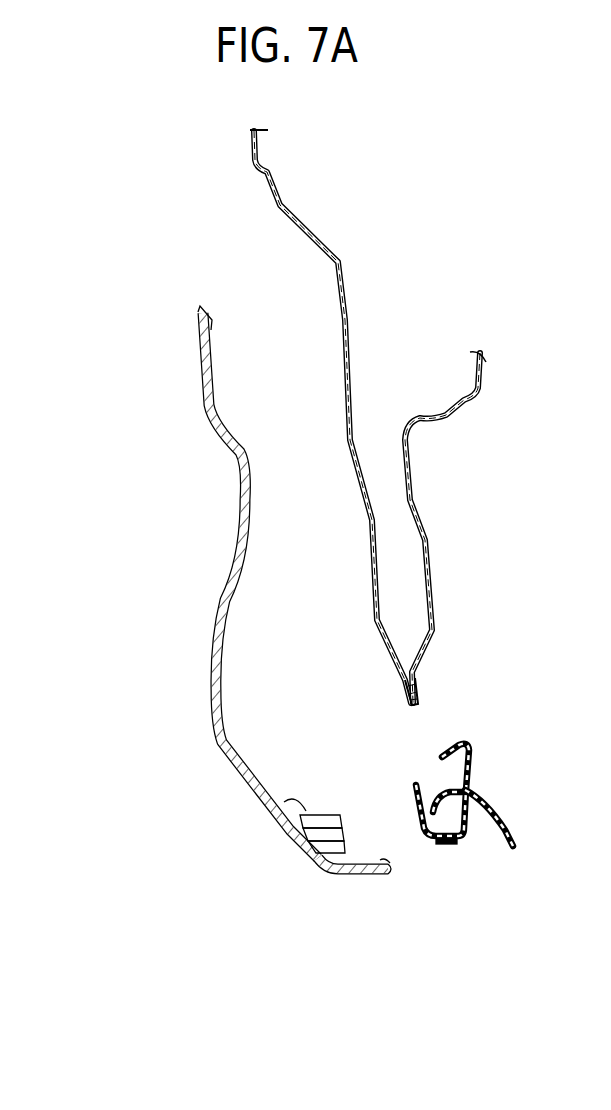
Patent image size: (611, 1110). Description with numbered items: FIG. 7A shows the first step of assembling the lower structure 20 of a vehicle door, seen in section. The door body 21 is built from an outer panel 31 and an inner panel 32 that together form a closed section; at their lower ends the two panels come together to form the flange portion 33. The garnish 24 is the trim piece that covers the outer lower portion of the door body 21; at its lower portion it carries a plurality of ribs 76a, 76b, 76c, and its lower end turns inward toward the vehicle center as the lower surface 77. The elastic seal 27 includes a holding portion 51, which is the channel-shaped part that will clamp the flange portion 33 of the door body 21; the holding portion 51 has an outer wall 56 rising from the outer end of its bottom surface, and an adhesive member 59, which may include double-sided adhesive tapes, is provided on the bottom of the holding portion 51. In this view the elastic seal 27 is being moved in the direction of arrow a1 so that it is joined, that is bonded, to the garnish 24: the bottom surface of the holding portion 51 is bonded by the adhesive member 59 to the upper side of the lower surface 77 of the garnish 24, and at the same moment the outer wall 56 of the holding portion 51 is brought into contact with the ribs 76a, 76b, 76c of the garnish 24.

The vehicle door structure 20 is at (193, 186).
The door body 21 is at (296, 466).
The garnish 24 is at (234, 534).
The elastic seal 27 is at (480, 753).
The outer panel 31 is at (370, 556).
The inner panel 32 is at (370, 532).
The flange portion 33 is at (396, 698).
The holding portion 51 is at (445, 798).
The outer wall 56 is at (418, 796).
The adhesive member 59 is at (450, 845).
The rib 76a is at (288, 806).
The rib 76b is at (301, 832).
The rib 76c is at (317, 857).
The lower surface 77 is at (386, 862).
The arrow a1 is at (412, 821).